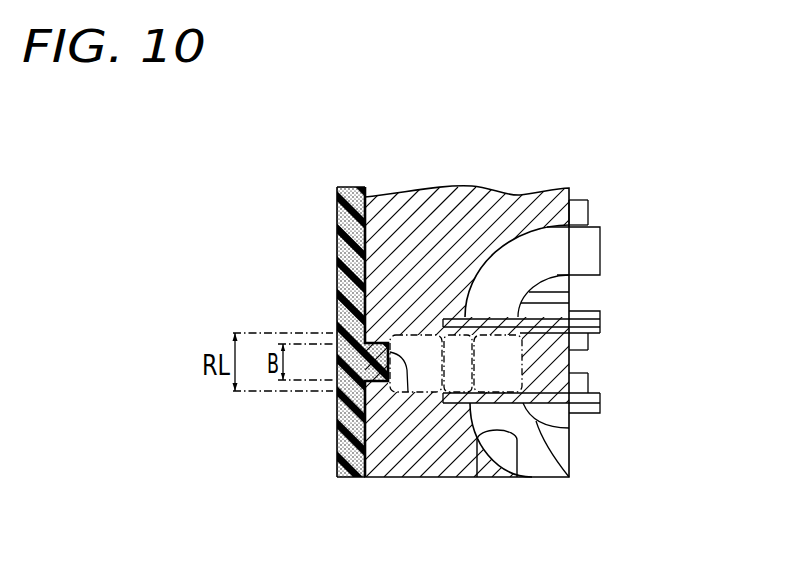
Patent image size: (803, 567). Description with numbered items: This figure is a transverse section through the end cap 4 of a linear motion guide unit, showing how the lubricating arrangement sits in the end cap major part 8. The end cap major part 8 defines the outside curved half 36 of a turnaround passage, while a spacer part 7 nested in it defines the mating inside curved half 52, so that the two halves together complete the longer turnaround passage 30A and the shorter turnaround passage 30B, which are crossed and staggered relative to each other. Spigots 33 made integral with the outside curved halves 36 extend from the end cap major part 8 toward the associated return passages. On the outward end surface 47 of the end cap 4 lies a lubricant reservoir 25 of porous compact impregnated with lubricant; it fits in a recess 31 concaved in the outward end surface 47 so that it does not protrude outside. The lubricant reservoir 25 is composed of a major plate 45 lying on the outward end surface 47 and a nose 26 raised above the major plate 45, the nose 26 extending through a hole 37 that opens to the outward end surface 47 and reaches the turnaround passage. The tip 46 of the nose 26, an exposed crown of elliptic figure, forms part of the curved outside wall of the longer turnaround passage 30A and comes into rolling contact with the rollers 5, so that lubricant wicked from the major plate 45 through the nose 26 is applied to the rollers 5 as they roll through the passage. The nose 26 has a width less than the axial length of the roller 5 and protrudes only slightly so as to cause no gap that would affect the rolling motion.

The end cap 4 is at (527, 185).
The roller 5 is at (520, 349).
The spacer part 7 is at (553, 312).
The end cap major part 8 is at (458, 240).
The lubricant reservoir 25 is at (338, 248).
The nose 26 is at (381, 392).
The longer turnaround passage 30A is at (550, 383).
The shorter turnaround passage 30B is at (590, 238).
The recess 31 is at (336, 413).
The spigot 33 is at (593, 262).
The outside curved half 36 is at (515, 460).
The hole 37 is at (378, 370).
The major plate 45 is at (337, 433).
The tip 46 is at (409, 393).
The outward end surface 47 is at (338, 217).
The inside curved half 52 is at (570, 478).